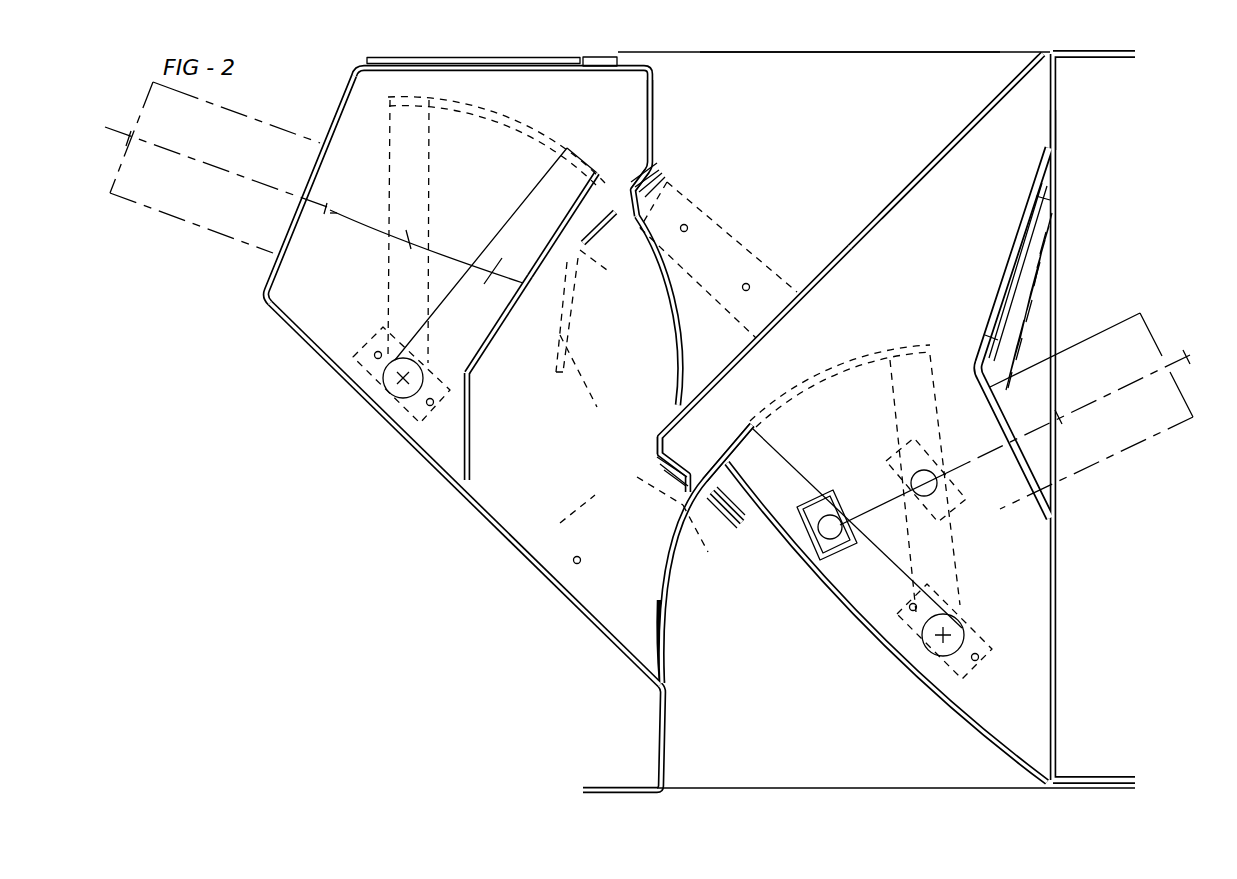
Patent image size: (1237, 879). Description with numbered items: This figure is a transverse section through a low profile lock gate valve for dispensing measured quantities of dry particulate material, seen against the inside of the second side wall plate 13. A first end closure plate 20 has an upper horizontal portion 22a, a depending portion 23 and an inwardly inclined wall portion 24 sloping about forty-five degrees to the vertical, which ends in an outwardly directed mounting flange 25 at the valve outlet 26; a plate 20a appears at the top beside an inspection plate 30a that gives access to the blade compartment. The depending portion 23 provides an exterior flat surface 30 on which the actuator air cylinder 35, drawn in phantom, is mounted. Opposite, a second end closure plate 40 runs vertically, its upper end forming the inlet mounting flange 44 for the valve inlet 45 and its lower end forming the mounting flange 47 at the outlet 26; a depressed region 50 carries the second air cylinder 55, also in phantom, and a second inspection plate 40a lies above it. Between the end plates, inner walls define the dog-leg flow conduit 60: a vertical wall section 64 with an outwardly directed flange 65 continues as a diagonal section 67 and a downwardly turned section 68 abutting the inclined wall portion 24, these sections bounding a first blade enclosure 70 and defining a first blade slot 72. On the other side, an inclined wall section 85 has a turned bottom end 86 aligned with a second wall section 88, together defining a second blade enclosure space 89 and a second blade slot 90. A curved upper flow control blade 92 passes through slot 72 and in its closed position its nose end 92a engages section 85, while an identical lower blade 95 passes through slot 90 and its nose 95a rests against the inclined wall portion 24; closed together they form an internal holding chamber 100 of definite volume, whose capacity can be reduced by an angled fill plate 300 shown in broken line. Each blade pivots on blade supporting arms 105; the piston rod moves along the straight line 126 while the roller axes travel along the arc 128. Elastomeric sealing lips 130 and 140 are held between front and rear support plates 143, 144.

The second side wall plate 13 is at (933, 270).
The first end closure plate 20 is at (457, 423).
The housing tab 20a is at (507, 56).
The upper generally horizontal portion 22a is at (373, 77).
The depending portion 23 is at (320, 157).
The inwardly inclined wall portion 24 is at (493, 523).
The outwardly directed mounting flange 25 is at (583, 790).
The valve outlet 26 is at (947, 764).
The exterior flat surface 30 is at (266, 281).
The inspection plate 30a is at (445, 58).
The actuator air cylinder 35 is at (217, 103).
The second end closure plate 40 is at (1101, 402).
The second inspection plate 40a is at (1033, 247).
The inlet mounting flange 44 is at (1082, 54).
The valve inlet 45 is at (856, 84).
The mounting flange 47 is at (1085, 778).
The second actuator cylinder mounting region 50 is at (1045, 475).
The second air cylinder 55 is at (1066, 350).
The flow conduit 60 is at (860, 148).
The upper vertically extending wall section 64 is at (656, 93).
The outwardly directed flange 65 is at (630, 56).
The second wall section 67 is at (473, 360).
The downwardly turned section 68 is at (471, 470).
The first blade-receiving enclosure 70 is at (580, 107).
The first blade slot 72 is at (615, 187).
The first inclined wall section 85 is at (890, 200).
The turned bottom end 86 is at (680, 456).
The second wall section 88 is at (897, 660).
The second blade enclosure space 89 is at (1037, 131).
The second blade slot 90 is at (750, 415).
The first flow control blade 92 is at (678, 359).
The nose end 92a is at (653, 431).
The second flow control blade 95 is at (662, 640).
The nose 95a is at (667, 677).
The internal holding chamber 100 is at (570, 459).
The blade supporting arms 105 is at (473, 385).
The cylinder axis line 126 is at (333, 213).
The arc 128 is at (450, 237).
The elastomeric lip 130 is at (662, 175).
The elastomeric lip 140 is at (588, 253).
The front support plate 143 is at (677, 187).
The rear support plate 144 is at (662, 167).
The angled fill plate 300 is at (587, 337).